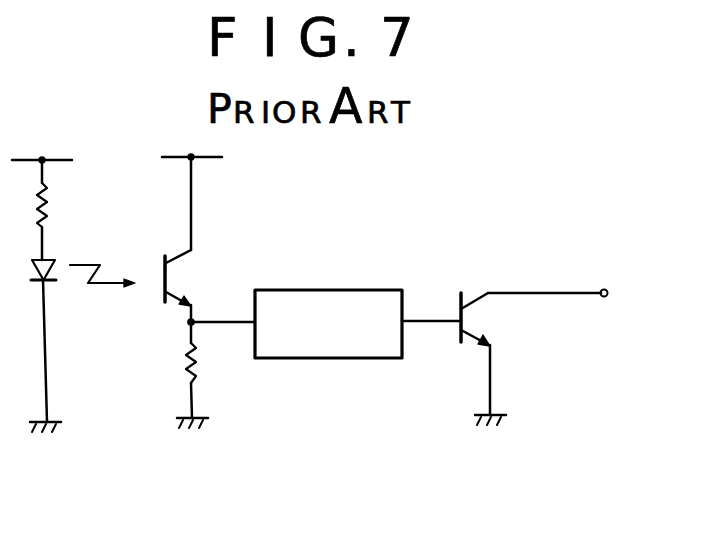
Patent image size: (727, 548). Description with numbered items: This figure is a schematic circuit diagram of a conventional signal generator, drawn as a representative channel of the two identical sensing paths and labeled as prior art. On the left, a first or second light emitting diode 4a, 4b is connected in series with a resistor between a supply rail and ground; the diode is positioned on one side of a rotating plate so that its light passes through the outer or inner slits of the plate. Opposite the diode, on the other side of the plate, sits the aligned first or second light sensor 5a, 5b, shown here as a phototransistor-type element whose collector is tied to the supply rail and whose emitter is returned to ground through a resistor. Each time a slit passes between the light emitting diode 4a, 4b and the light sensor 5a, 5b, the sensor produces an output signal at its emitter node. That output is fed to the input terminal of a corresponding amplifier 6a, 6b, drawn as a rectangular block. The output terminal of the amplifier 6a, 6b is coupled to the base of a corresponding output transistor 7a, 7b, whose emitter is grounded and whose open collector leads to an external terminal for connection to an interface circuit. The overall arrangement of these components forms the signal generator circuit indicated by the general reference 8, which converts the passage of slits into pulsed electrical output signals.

The first light emitting diode 4a is at (75, 294).
The second light emitting diode 4b is at (75, 294).
The first light sensor 5a is at (231, 291).
The second light sensor 5b is at (175, 271).
The amplifier 6a is at (337, 301).
The amplifier 6b is at (346, 289).
The output transistor 7a is at (505, 358).
The output transistor 7b is at (470, 318).
The photocoupler circuit 8 is at (317, 212).